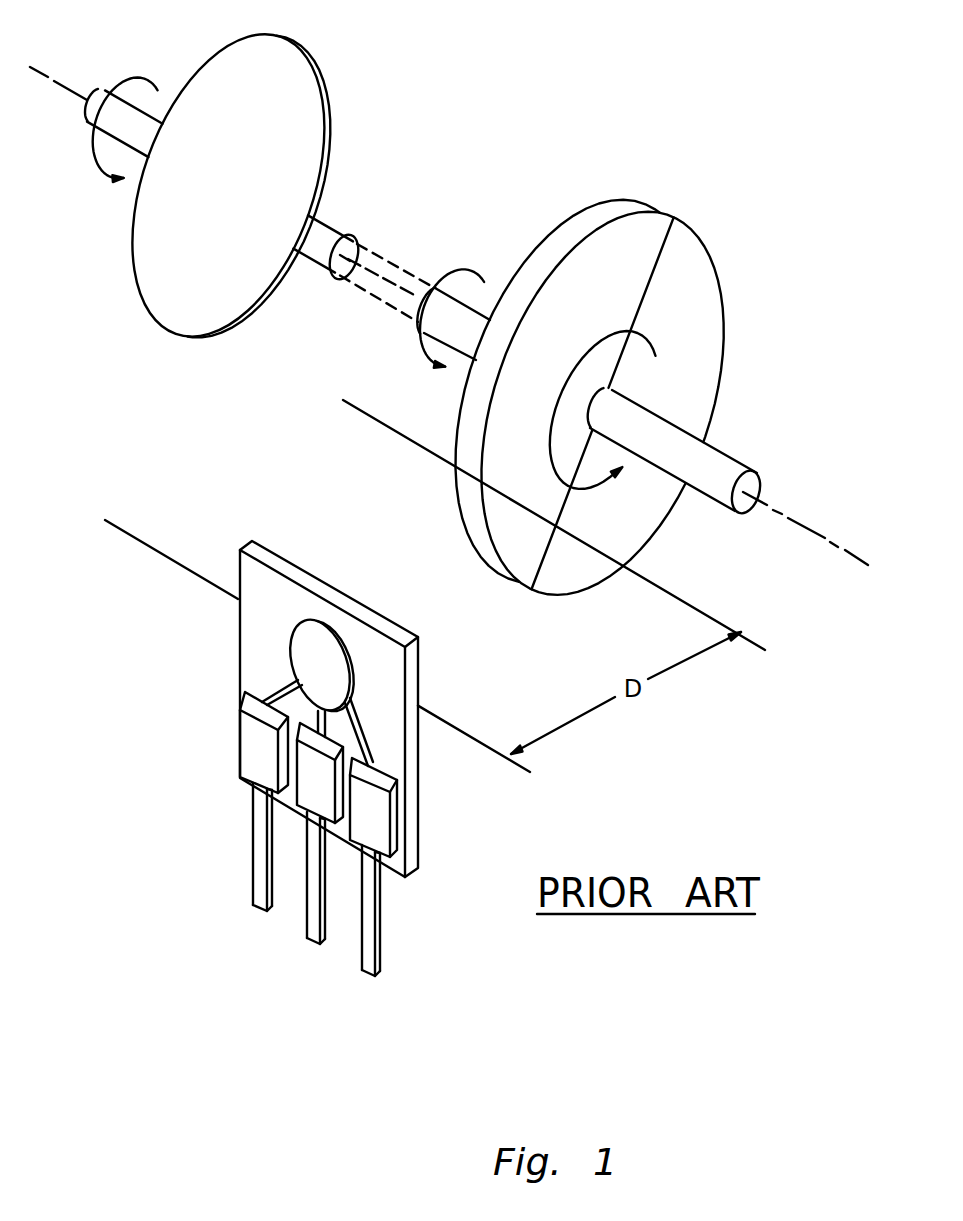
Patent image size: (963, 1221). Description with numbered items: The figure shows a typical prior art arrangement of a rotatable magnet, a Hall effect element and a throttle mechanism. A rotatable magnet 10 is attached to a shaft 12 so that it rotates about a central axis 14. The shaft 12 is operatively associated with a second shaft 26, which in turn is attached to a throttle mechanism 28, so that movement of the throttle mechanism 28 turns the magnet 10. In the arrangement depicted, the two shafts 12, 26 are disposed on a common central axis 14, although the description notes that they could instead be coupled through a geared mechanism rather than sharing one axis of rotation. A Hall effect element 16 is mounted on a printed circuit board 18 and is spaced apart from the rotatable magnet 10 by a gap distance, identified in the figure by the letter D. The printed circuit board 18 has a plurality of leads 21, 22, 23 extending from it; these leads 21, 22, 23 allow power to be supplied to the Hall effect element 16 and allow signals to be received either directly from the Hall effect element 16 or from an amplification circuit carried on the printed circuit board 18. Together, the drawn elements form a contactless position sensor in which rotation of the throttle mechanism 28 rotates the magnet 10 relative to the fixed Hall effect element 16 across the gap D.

The rotatable magnet 10 is at (597, 217).
The shaft 12 is at (732, 470).
The central axis 14 is at (60, 87).
The Hall effect element 16 is at (333, 679).
The printed circuit board 18 is at (353, 607).
The lead 21 is at (381, 972).
The lead 22 is at (325, 940).
The lead 23 is at (268, 909).
The shaft 26 is at (337, 230).
The throttle mechanism 28 is at (327, 113).